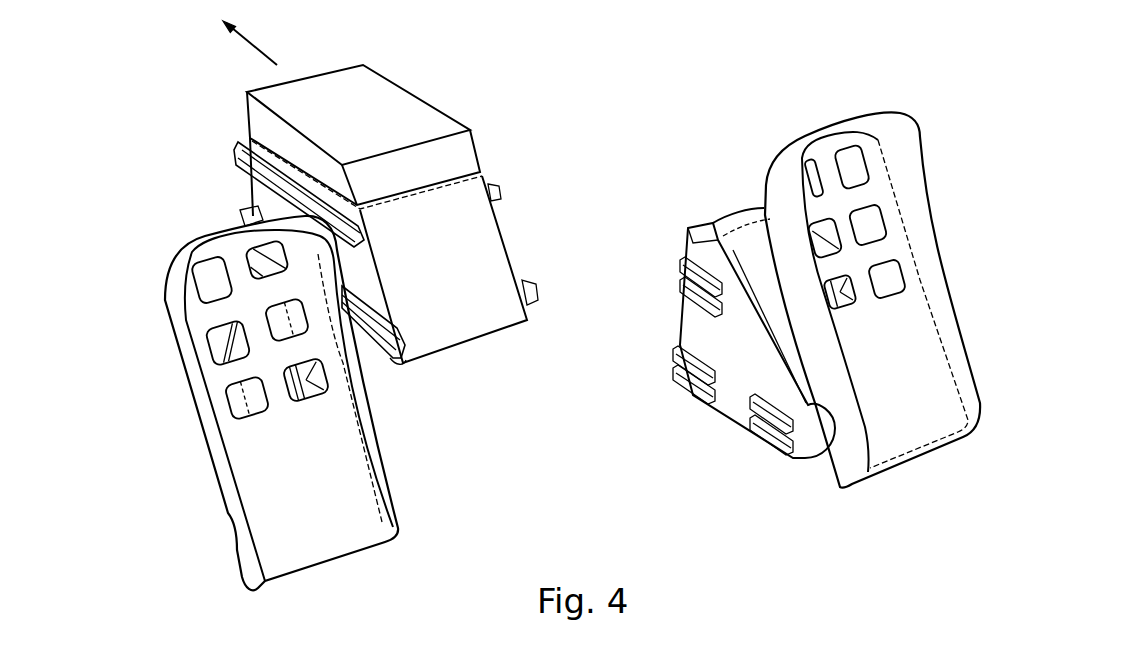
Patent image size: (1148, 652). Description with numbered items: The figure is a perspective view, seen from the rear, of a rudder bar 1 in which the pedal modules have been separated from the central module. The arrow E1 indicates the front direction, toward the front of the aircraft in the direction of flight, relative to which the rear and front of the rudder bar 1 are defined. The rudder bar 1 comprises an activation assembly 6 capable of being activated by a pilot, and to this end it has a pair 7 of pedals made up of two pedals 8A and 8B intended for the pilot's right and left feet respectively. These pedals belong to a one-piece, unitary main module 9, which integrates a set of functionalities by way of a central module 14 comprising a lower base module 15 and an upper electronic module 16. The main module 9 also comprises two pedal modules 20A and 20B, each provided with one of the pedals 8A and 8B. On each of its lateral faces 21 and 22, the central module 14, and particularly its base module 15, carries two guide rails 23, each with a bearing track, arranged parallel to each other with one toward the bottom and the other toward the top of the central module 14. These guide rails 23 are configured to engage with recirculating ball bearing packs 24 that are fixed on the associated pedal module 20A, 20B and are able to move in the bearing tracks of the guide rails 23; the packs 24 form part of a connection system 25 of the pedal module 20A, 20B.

The rudder bar 1 is at (165, 124).
The arrow indicating the front direction E1 is at (257, 43).
The activation assembly 6 is at (684, 99).
The pair of pedals 7 is at (426, 548).
The pedal 8A is at (950, 289).
The pedal 8B is at (394, 425).
The main module 9 is at (453, 86).
The central module 14 is at (485, 99).
The lower base module 15 is at (503, 231).
The upper electronic module 16 is at (475, 147).
The pedal module 20A is at (836, 96).
The pedal module 20B is at (162, 246).
The lateral face 21 is at (530, 249).
The lateral face 22 is at (228, 187).
The guide rail 23 is at (238, 150).
The recirculating ball bearing pack 24 is at (770, 445).
The connection system 25 is at (656, 388).